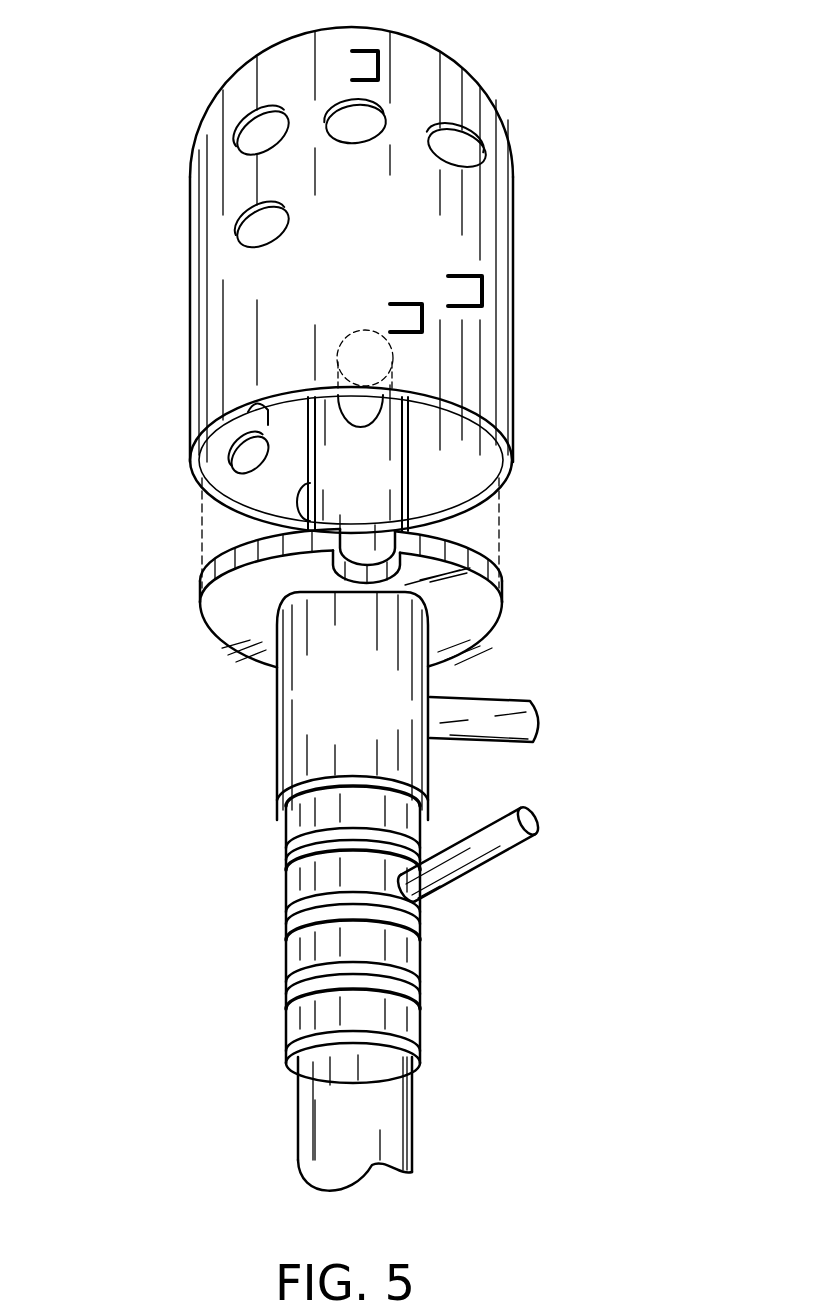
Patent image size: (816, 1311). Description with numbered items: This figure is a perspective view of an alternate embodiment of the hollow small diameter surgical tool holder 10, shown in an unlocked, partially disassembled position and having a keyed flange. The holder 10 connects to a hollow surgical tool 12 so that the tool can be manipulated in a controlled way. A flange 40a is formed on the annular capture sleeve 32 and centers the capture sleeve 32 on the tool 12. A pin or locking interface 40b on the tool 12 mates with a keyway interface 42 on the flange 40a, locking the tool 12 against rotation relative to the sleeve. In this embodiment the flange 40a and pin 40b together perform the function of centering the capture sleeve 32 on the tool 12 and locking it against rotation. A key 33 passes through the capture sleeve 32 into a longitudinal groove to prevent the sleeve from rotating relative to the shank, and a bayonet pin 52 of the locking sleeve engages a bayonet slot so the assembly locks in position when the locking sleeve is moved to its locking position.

The hollow surgical tool 12 is at (512, 152).
The pin or locking interface 40b is at (372, 408).
The keyway interface 42 is at (392, 513).
The flange 40a is at (487, 622).
The capture sleeve 32 is at (313, 697).
The key 33 is at (525, 717).
The bayonet pin 52 is at (525, 823).
The hollow small diameter surgical tool holder 10 is at (197, 940).